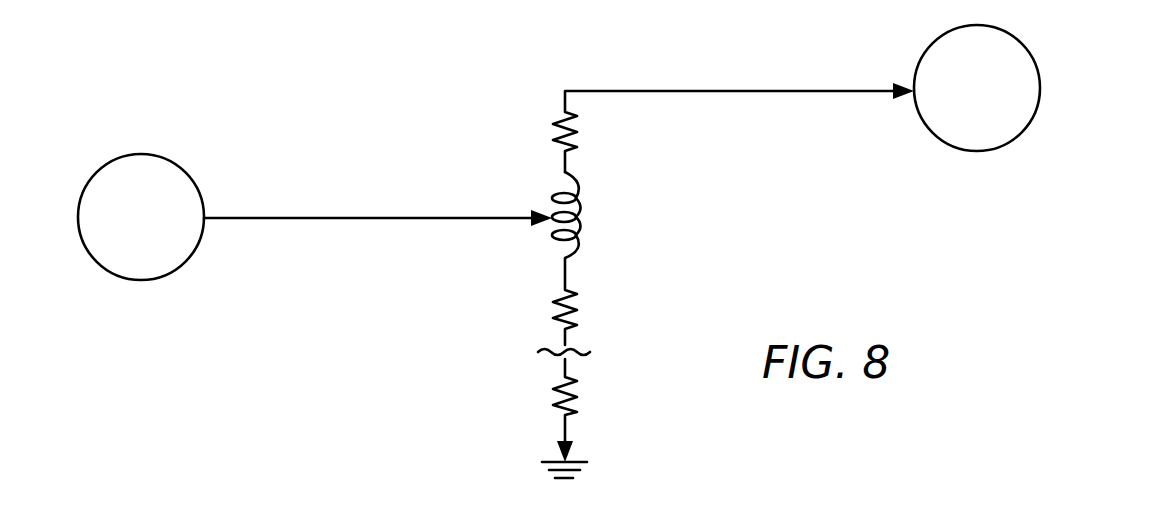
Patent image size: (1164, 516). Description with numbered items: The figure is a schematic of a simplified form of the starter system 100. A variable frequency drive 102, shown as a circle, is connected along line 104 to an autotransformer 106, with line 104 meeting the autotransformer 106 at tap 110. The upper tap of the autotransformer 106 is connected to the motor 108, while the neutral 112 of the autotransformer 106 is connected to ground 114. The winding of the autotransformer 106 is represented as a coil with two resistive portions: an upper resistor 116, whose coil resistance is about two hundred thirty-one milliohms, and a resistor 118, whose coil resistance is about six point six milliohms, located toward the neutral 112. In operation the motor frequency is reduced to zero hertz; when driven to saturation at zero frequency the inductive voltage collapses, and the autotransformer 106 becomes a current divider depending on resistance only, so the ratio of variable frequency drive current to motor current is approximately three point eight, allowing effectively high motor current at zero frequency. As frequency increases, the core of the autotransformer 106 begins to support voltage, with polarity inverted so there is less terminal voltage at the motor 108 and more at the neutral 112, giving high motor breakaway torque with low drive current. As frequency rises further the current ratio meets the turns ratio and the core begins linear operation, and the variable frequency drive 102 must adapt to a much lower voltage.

The starter system 100 is at (721, 201).
The variable frequency drive 102 is at (185, 265).
The line 104 is at (330, 217).
The autotransformer 106 is at (578, 207).
The motor 108 is at (1032, 123).
The tap 110 is at (549, 215).
The neutral 112 is at (567, 262).
The ground 114 is at (580, 465).
The upper resistor 116 is at (557, 120).
The resistor 118 is at (553, 305).